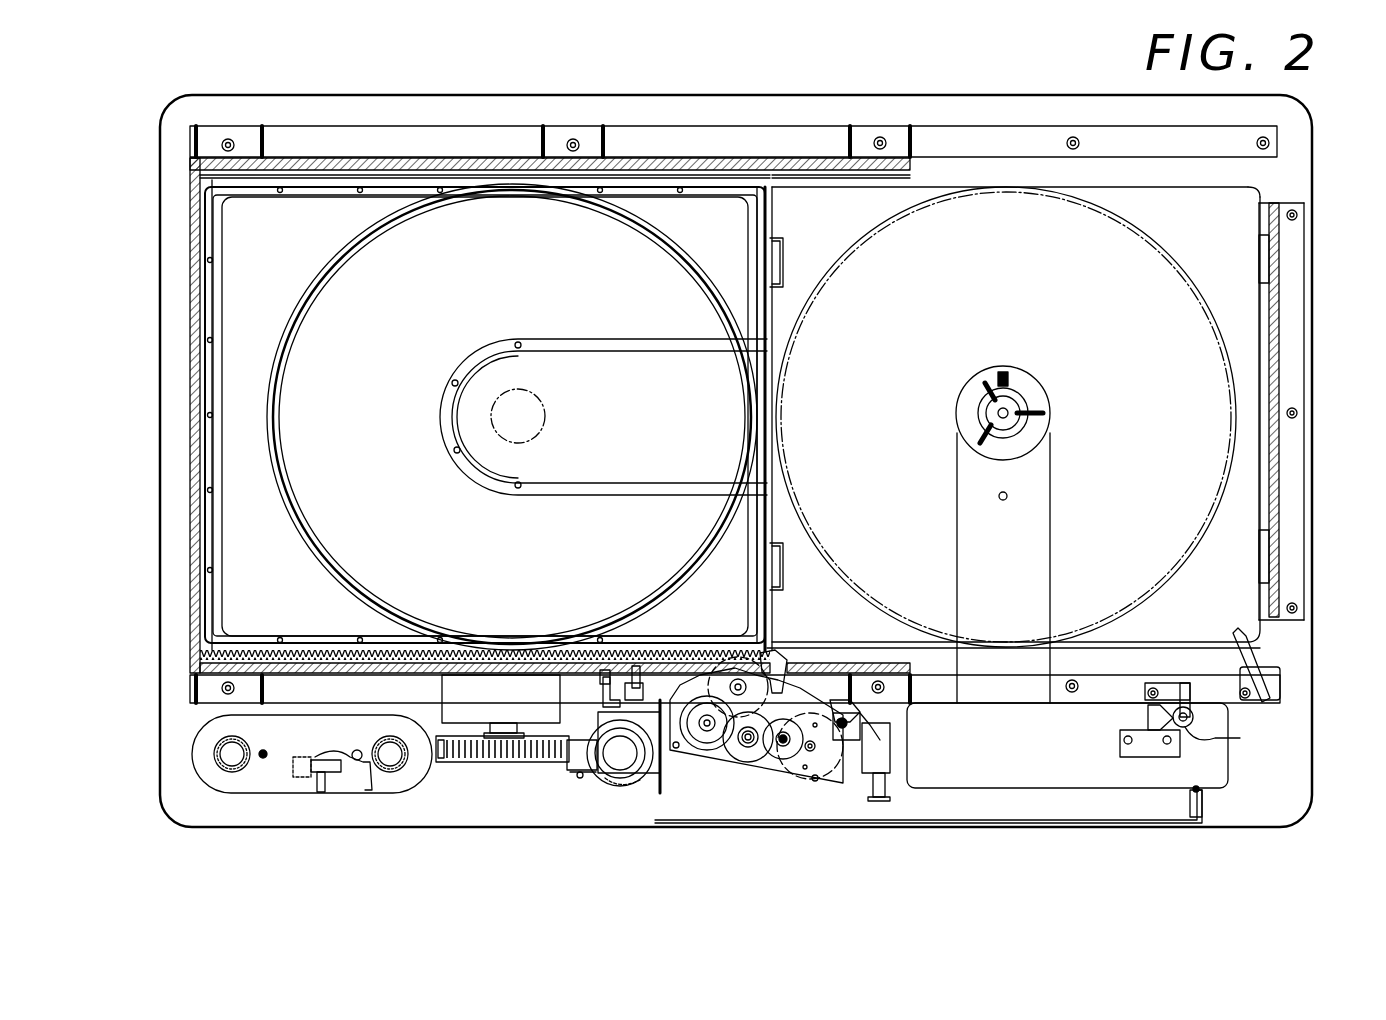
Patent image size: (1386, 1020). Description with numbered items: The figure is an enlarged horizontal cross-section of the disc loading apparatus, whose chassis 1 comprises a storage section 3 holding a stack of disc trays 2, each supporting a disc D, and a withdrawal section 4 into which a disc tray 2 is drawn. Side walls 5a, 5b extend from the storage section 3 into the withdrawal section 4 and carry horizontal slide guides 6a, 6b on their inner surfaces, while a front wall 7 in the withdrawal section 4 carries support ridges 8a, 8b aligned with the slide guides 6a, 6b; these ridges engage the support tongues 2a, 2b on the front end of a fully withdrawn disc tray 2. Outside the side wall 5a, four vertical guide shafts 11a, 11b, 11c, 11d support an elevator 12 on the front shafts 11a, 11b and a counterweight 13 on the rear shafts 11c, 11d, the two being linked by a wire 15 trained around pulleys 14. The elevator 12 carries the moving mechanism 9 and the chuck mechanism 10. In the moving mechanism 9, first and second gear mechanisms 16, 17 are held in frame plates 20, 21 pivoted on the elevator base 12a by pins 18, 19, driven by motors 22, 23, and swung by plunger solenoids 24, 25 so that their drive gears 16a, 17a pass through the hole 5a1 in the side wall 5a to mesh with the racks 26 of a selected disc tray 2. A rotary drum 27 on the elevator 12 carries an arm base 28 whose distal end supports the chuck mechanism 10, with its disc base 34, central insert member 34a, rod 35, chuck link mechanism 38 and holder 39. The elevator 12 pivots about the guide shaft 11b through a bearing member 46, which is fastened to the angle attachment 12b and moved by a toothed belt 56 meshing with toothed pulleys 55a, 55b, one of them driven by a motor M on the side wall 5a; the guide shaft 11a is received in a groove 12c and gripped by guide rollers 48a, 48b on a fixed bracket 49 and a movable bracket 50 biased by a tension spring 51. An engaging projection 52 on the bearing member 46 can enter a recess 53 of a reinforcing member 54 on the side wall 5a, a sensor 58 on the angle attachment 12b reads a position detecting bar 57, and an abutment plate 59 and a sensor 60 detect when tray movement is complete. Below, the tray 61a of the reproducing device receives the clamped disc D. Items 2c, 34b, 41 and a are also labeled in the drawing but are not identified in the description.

The chassis 1 is at (266, 93).
The disc tray 2 is at (713, 205).
The support tongue 2a is at (785, 565).
The support tongue 2b is at (785, 262).
The hub opening 2c is at (670, 473).
The storage section 3 is at (785, 212).
The withdrawal section 4 is at (1001, 243).
The side wall 5a is at (280, 677).
The vertical hole 5a1 is at (707, 663).
The side wall 5b is at (486, 157).
The slide guide 6a is at (830, 663).
The slide guide 6b is at (833, 180).
The front wall 7 is at (1276, 337).
The support ridge 8a is at (1268, 557).
The support ridge 8b is at (1268, 257).
The moving mechanism 9 is at (720, 770).
The chuck mechanism 10 is at (1014, 405).
The guide shaft 11a is at (1195, 720).
The guide shaft 11b is at (618, 790).
The guide shaft 11c is at (385, 765).
The guide shaft 11d is at (215, 755).
The elevator 12 is at (1110, 790).
The elevator base 12a is at (745, 765).
The angle attachment 12b is at (660, 793).
The groove 12c is at (1200, 725).
The counterweight 13 is at (222, 785).
The pulley 14 is at (338, 778).
The wire 15 is at (470, 765).
The first gear mechanism 16 is at (781, 769).
The second gear mechanism 17 is at (782, 760).
The drive gear 16a is at (808, 641).
The drive gear 17a is at (773, 658).
The pin 18 is at (875, 771).
The pin 19 is at (880, 790).
The frame plate 20 is at (893, 649).
The frame plate 21 is at (865, 700).
The motor 22 is at (827, 789).
The motor 23 is at (822, 800).
The plunger solenoid 24 is at (920, 762).
The plunger solenoid 25 is at (900, 780).
The rack 26 is at (686, 657).
The rotary drum 27 is at (1040, 765).
The arm base 28 is at (1050, 568).
The disc base 34 is at (975, 393).
The central insert member 34a is at (982, 415).
The clamper hub 34b is at (1023, 442).
The rod 35 is at (985, 435).
The chuck link mechanism 38 is at (1035, 425).
The holder 39 is at (1025, 393).
The pin 41 is at (1003, 372).
The bearing member 46 is at (580, 778).
The guide roller 48a is at (1160, 757).
The guide roller 48b is at (1185, 683).
The bracket 49 is at (1200, 800).
The angularly movable bracket 50 is at (1165, 683).
The tension spring 51 is at (1148, 715).
The engaging projection 52 is at (575, 762).
The recess 53 is at (603, 690).
The reinforcing member 54 is at (602, 662).
The toothed pulley 55a is at (495, 762).
The toothed pulley 55b is at (512, 802).
The toothed belt 56 is at (438, 760).
The position detecting bar 57 is at (636, 666).
The sensor 58 is at (643, 690).
The abutment plate 59 is at (1252, 667).
The sensor 60 is at (1237, 640).
The tray 61a is at (1243, 196).
The disc D is at (318, 287).
The center hole a is at (547, 416).
The motor M is at (455, 690).